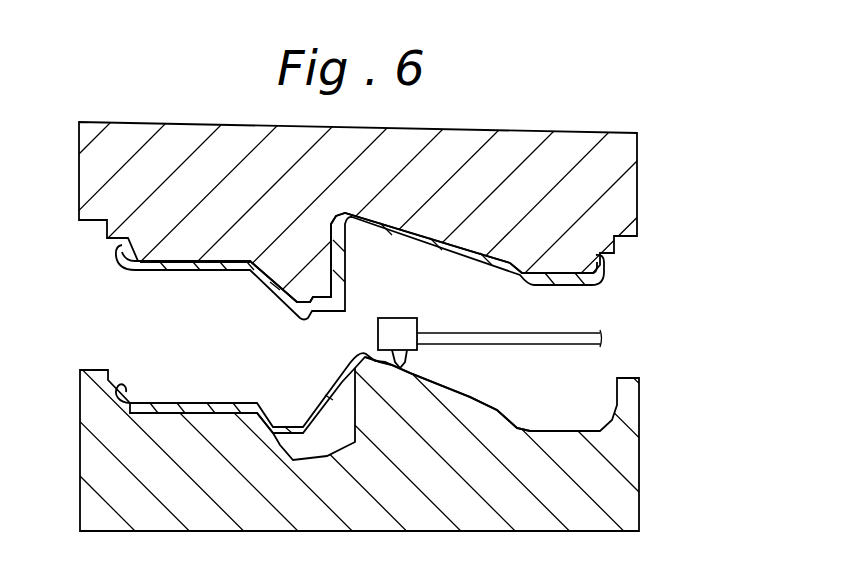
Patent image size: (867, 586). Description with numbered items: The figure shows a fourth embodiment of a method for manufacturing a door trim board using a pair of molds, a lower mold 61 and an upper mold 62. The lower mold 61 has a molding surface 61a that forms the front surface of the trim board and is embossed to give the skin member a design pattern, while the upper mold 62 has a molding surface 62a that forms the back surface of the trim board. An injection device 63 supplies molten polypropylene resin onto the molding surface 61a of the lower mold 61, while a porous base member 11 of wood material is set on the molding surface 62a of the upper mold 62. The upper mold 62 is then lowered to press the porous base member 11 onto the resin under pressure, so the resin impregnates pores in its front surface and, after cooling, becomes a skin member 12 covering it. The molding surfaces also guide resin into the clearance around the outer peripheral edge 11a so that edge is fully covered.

The upper mold 62 is at (618, 223).
The molding surface 62a is at (212, 263).
The porous base member 11 is at (537, 287).
The outer peripheral edge 11a is at (115, 243).
The injection device 63 is at (402, 327).
The lower mold 61 is at (620, 463).
The molding surface 61a is at (500, 410).
The skin member 12 is at (205, 402).